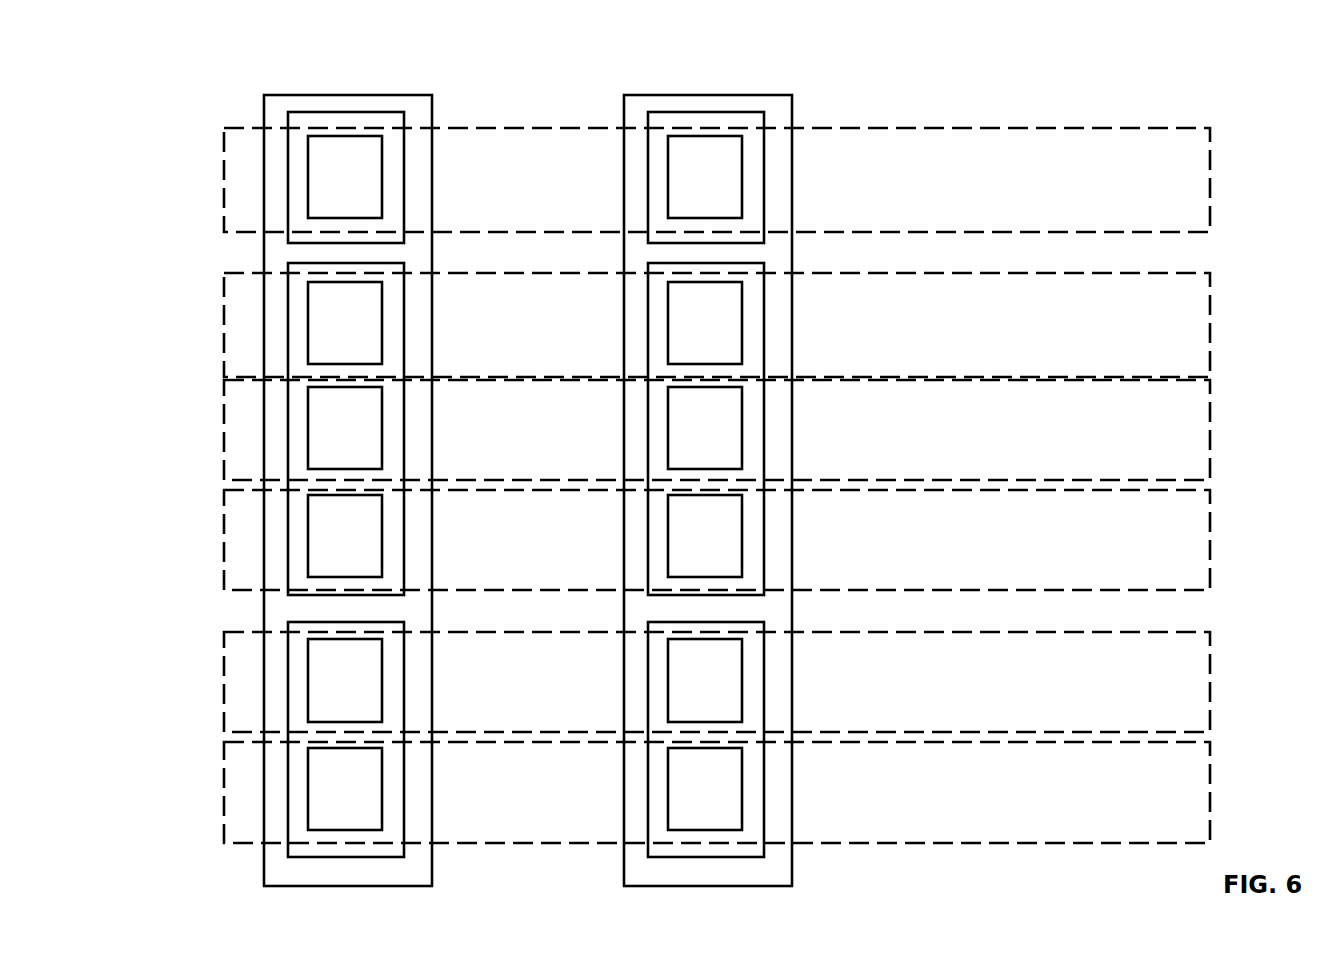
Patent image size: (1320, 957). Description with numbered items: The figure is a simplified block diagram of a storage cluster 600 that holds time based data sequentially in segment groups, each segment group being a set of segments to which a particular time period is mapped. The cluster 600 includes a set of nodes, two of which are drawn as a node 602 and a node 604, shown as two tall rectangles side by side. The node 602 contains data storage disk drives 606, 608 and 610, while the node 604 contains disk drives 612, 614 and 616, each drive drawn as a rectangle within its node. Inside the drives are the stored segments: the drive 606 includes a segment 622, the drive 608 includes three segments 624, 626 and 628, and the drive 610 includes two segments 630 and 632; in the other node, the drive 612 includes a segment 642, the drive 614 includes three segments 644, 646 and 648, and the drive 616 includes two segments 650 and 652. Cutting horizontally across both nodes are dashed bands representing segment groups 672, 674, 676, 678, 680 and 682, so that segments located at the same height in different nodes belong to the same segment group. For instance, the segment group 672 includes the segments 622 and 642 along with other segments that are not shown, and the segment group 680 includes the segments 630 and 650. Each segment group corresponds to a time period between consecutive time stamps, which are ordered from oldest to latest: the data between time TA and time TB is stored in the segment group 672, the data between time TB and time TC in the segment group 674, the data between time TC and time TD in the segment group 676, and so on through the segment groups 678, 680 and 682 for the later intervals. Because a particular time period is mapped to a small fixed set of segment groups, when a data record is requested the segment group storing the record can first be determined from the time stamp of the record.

The storage cluster 600 is at (1074, 46).
The node 602 is at (348, 95).
The node 604 is at (708, 95).
The data storage disk drive 606 is at (405, 211).
The data storage disk drive 608 is at (405, 402).
The data storage disk drive 610 is at (405, 757).
The disk drive 612 is at (765, 211).
The disk drive 614 is at (765, 402).
The disk drive 616 is at (765, 757).
The segment 622 is at (367, 156).
The segment 624 is at (367, 323).
The segment 626 is at (370, 433).
The segment 628 is at (367, 545).
The segment 630 is at (370, 677).
The segment 632 is at (363, 798).
The segment 642 is at (727, 156).
The segment 644 is at (727, 323).
The segment 646 is at (730, 433).
The segment 648 is at (727, 545).
The segment 650 is at (730, 677).
The segment 652 is at (723, 798).
The segment group 672 is at (1210, 182).
The segment group 674 is at (1210, 330).
The segment group 676 is at (1210, 438).
The segment group 678 is at (1210, 545).
The segment group 680 is at (1210, 682).
The segment group 682 is at (1210, 795).